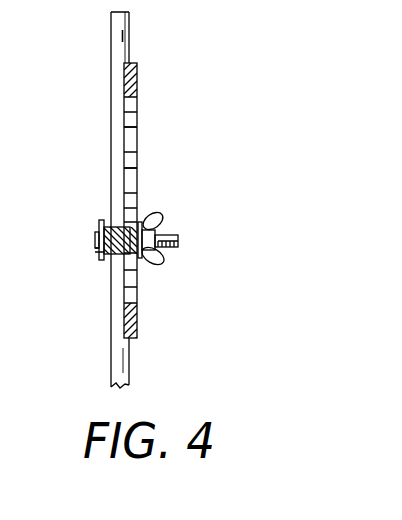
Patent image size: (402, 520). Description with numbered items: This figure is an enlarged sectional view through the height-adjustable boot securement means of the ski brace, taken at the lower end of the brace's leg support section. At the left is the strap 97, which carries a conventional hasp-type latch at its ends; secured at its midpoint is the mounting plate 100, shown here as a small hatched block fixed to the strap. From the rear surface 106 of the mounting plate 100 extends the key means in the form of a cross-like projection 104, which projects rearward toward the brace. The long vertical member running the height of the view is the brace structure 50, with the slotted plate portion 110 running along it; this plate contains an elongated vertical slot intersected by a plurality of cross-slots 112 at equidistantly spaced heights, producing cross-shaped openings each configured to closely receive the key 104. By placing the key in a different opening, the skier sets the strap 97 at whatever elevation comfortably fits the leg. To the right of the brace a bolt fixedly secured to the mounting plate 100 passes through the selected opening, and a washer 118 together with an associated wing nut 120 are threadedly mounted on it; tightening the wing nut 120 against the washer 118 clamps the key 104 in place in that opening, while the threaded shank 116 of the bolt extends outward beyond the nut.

The tubular support rod 50 is at (111, 143).
The insert strip 110 is at (133, 105).
The cross-slots 112 is at (138, 162).
The mounting plate 100 is at (99, 222).
The strap 97 is at (98, 253).
The rear surface 106 is at (125, 268).
The cross-like projection 104 is at (139, 270).
The washer 118 is at (172, 153).
The wing nut 120 is at (167, 261).
The threaded shaft 116 is at (177, 236).